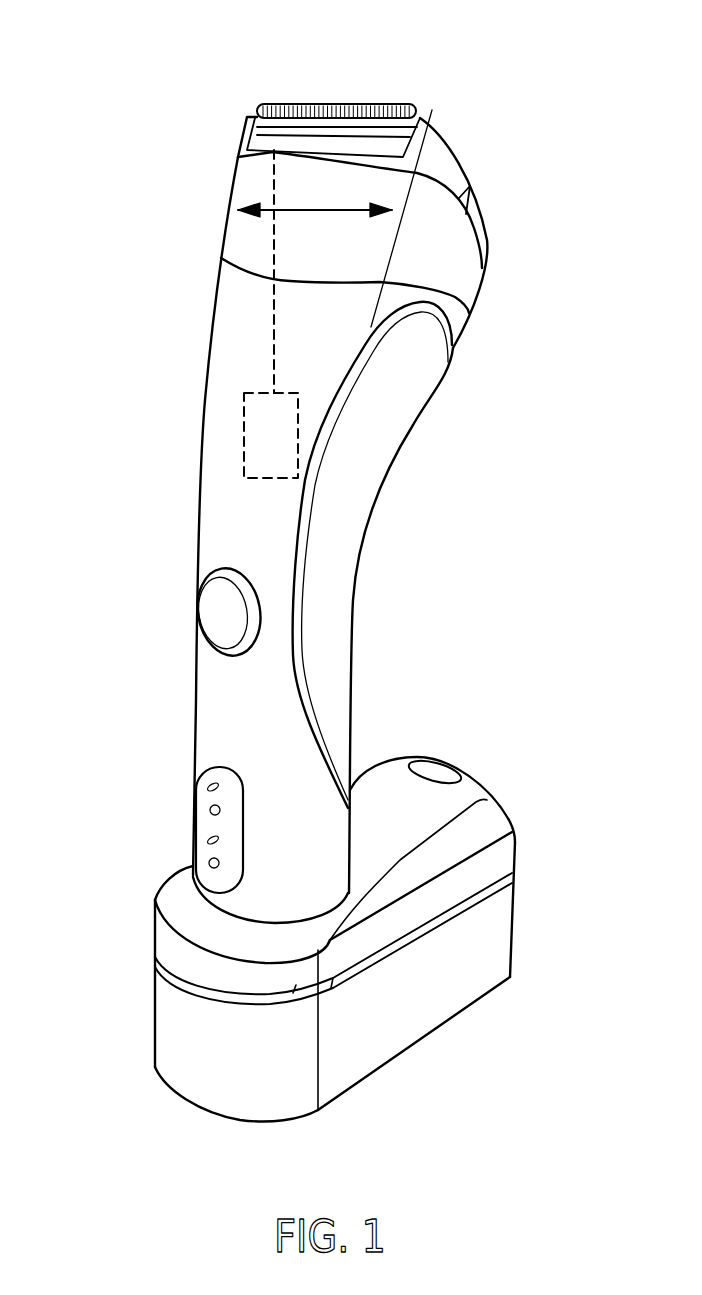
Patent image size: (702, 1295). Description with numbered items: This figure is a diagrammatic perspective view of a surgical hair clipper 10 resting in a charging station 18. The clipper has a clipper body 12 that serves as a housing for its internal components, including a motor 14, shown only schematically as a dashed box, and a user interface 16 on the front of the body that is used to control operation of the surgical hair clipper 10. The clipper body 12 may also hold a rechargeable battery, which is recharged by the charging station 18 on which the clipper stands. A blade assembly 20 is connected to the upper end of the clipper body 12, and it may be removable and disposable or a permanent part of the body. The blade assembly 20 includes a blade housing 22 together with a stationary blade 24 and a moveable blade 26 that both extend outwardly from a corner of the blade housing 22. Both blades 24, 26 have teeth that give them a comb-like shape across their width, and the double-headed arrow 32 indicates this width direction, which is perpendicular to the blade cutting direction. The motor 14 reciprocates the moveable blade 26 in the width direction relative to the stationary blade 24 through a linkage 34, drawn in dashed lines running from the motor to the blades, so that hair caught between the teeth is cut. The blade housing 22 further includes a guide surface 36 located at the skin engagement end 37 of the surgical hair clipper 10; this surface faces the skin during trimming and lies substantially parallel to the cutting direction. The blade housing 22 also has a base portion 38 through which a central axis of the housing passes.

The surgical hair clipper 10 is at (150, 223).
The clipper body 12 is at (188, 493).
The motor 14 is at (258, 437).
The user interface 16 is at (190, 636).
The charging station 18 is at (150, 1021).
The blade assembly 20 is at (486, 136).
The blade housing 22 is at (485, 220).
The stationary blade 24 is at (325, 84).
The moveable blade 26 is at (336, 111).
The arrow 32 is at (313, 210).
The linkage 34 is at (272, 300).
The guide surface 36 is at (435, 102).
The skin engagement end 37 is at (245, 80).
The base portion 38 is at (186, 830).